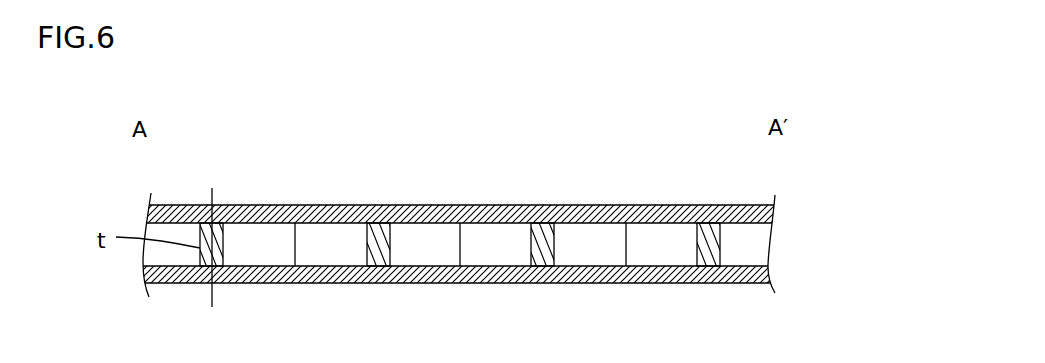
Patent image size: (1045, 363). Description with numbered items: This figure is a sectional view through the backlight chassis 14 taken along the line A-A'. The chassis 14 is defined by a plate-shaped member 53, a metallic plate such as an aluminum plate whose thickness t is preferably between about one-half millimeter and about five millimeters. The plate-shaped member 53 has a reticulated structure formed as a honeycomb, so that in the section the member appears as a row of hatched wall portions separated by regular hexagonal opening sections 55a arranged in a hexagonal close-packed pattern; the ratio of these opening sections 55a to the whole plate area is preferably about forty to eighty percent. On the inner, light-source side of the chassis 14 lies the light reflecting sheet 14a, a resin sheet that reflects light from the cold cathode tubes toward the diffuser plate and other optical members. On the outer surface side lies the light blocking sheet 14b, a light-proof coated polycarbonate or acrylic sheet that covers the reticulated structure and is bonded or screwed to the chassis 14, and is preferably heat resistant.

The backlight chassis 14 is at (877, 235).
The light reflecting sheet 14a is at (770, 216).
The light blocking sheet 14b is at (762, 278).
The plate-shaped member 53 is at (752, 243).
The opening sections 55a is at (367, 246).